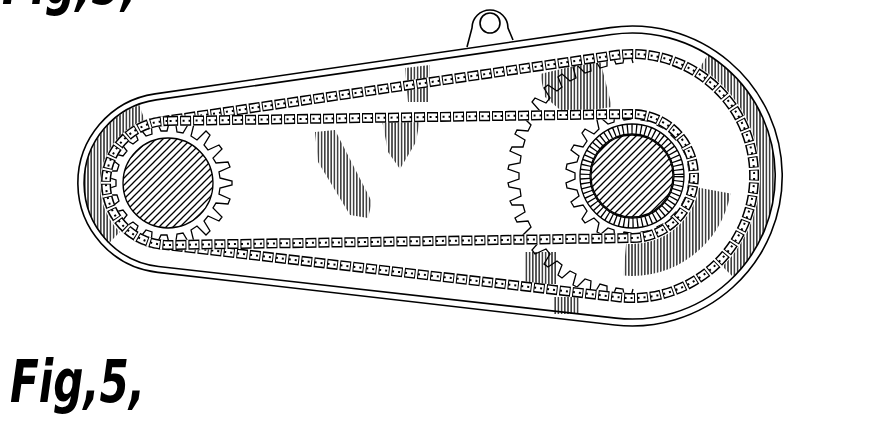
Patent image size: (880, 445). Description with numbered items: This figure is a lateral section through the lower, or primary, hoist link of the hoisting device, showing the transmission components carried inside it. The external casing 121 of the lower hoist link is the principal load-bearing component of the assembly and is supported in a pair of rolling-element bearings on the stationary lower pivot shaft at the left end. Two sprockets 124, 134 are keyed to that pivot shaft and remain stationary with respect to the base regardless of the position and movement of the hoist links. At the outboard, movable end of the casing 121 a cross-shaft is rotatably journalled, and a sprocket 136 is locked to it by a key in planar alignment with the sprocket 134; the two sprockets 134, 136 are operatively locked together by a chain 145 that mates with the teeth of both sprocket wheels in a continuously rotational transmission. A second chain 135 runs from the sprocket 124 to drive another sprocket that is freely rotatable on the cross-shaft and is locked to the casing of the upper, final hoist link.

The external casing 121 is at (293, 283).
The sprocket 124 is at (683, 87).
The sprocket 134 is at (640, 205).
The chain 135 is at (387, 83).
The sprocket 136 is at (114, 193).
The chain 145 is at (352, 117).